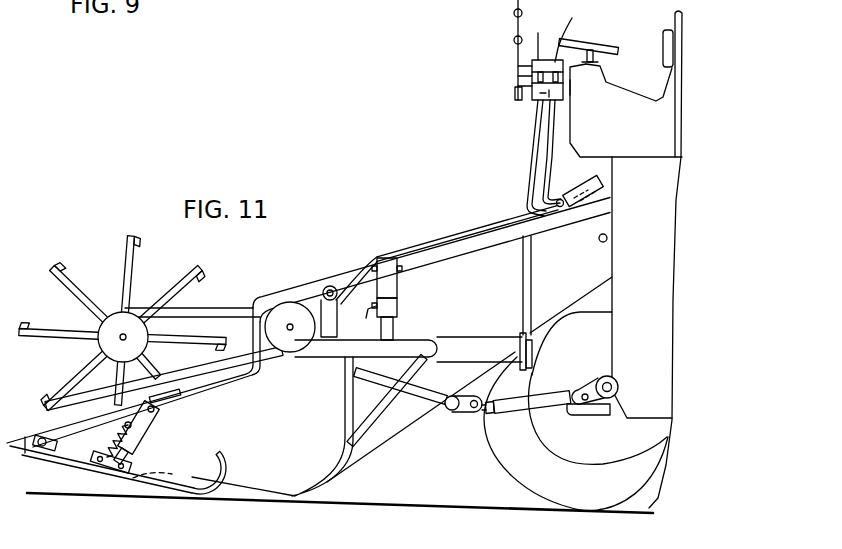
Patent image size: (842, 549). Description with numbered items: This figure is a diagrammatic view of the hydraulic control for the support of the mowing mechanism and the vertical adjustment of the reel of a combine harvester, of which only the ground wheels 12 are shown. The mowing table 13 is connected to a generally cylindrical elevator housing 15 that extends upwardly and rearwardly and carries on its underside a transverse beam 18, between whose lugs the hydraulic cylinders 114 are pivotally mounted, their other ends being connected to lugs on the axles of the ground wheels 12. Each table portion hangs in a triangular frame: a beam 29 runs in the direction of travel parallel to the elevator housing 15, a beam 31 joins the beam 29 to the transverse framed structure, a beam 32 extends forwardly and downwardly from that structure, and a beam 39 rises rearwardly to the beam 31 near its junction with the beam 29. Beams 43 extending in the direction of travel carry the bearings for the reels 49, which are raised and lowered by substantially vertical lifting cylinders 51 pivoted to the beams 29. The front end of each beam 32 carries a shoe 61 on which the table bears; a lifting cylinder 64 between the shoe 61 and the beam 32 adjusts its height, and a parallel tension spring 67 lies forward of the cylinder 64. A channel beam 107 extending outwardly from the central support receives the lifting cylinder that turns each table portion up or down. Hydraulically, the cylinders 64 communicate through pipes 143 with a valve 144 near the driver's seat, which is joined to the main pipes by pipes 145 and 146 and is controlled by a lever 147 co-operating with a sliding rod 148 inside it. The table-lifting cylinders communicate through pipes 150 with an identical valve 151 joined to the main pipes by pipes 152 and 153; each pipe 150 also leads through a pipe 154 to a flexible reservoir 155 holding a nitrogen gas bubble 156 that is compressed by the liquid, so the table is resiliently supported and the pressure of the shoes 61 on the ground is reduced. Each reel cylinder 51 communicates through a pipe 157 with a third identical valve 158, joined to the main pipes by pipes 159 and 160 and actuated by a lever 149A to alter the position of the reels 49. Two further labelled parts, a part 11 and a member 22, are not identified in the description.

The tractor fender 11 is at (603, 338).
The ground wheel 12 is at (528, 484).
The mowing table 13 is at (322, 490).
The elevator housing 15 is at (403, 422).
The beam 18 is at (450, 413).
The upright strut 22 is at (533, 293).
The beam 29 is at (461, 339).
The beam 31 is at (415, 340).
The beam 32 is at (89, 418).
The beam 39 is at (371, 425).
The beam 43 is at (222, 308).
The reel 49 is at (77, 278).
The lifting cylinder 51 is at (321, 298).
The shoe 61 is at (190, 496).
The lifting cylinder 64 is at (140, 445).
The tension spring 67 is at (110, 443).
The channel beam 107 is at (397, 287).
The hydraulic cylinder 114 is at (504, 406).
The pipe 143 is at (213, 386).
The valve 144 is at (536, 103).
The pipe 145 is at (530, 86).
The pipe 146 is at (571, 89).
The lever 147 is at (514, 38).
The sliding rod 148 is at (567, 100).
The lever 149A is at (514, 12).
The pipe 150 is at (438, 270).
The valve 151 is at (538, 33).
The pipe 152 is at (572, 18).
The pipe 153 is at (570, 42).
The pipe 154 is at (563, 224).
The reservoir 155 is at (587, 210).
The gas bubble 156 is at (611, 180).
The pipe 157 is at (424, 256).
The valve 158 is at (530, 76).
The pipe 159 is at (530, 64).
The pipe 160 is at (598, 64).